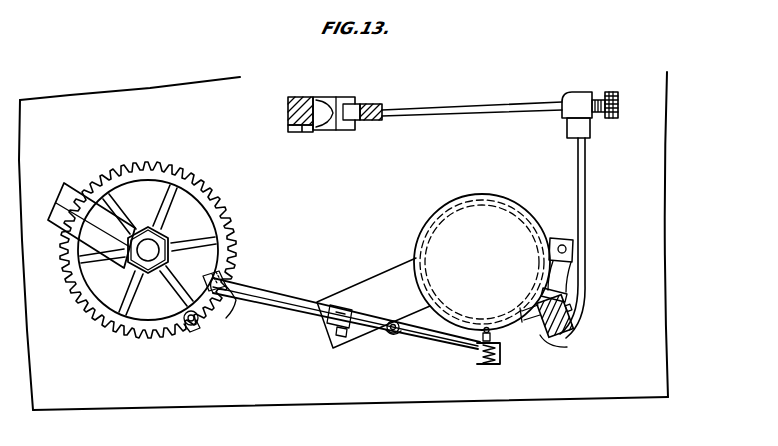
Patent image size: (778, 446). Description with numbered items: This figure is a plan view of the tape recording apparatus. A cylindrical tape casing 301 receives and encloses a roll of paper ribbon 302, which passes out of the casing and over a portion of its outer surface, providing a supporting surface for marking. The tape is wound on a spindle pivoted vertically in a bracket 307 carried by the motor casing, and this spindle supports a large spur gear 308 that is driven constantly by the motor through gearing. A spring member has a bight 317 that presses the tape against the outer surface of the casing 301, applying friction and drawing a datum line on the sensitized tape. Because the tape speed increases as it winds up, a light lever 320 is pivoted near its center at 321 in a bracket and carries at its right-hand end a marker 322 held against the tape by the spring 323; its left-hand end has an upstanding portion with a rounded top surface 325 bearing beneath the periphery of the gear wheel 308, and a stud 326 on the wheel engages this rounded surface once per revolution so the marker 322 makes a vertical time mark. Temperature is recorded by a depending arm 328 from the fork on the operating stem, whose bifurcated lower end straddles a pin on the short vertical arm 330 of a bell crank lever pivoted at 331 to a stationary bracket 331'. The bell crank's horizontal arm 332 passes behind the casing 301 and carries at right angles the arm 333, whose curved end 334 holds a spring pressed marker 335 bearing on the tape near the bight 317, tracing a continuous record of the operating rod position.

The cylindrical tape casing 301 is at (455, 217).
The roll of paper ribbon 302 is at (287, 290).
The bracket 307 is at (67, 184).
The spur gear 308 is at (239, 250).
The bight 317 is at (557, 293).
The light lever 320 is at (297, 308).
The pivot 321 is at (343, 343).
The marker 322 is at (493, 340).
The spring 323 is at (480, 357).
The rounded top surface 325 is at (223, 298).
The stud 326 is at (183, 332).
The depending arm 328 is at (290, 115).
The short vertical arm 330 is at (292, 132).
The pivot 331 is at (336, 134).
The stationary bracket 331' is at (394, 97).
The horizontal arm 332 is at (470, 113).
The arm 333 is at (583, 177).
The curved end 334 is at (578, 312).
The spring pressed marker 335 is at (574, 345).